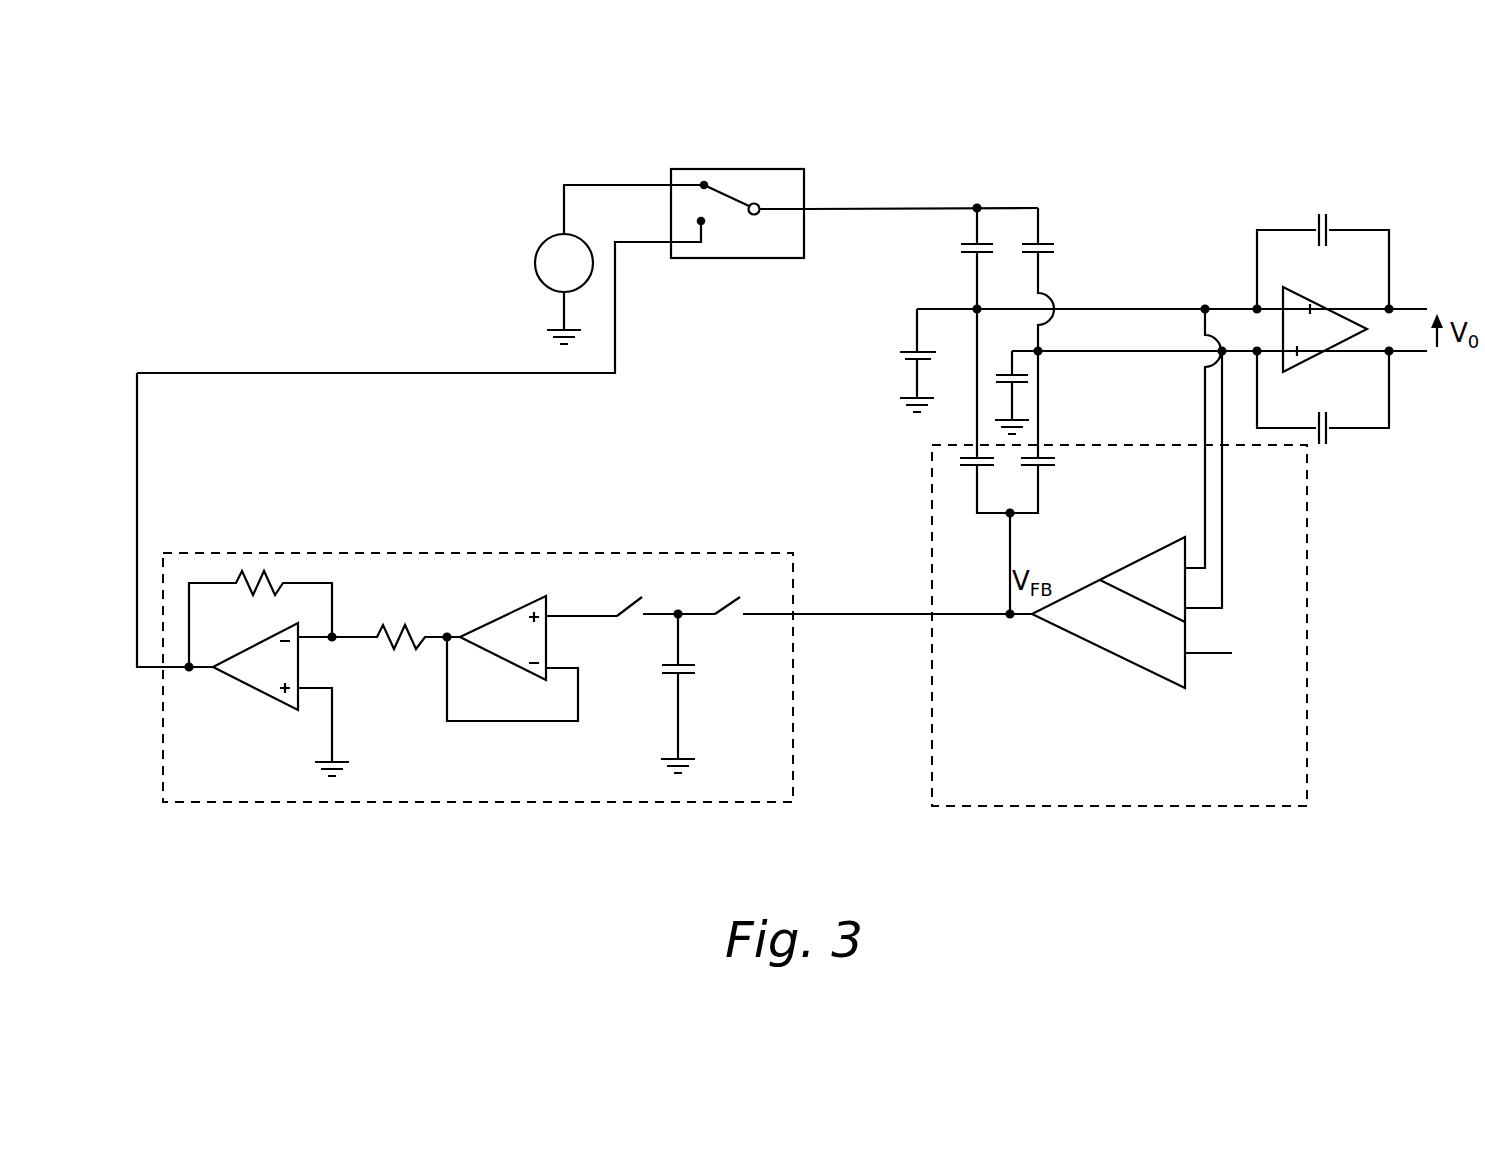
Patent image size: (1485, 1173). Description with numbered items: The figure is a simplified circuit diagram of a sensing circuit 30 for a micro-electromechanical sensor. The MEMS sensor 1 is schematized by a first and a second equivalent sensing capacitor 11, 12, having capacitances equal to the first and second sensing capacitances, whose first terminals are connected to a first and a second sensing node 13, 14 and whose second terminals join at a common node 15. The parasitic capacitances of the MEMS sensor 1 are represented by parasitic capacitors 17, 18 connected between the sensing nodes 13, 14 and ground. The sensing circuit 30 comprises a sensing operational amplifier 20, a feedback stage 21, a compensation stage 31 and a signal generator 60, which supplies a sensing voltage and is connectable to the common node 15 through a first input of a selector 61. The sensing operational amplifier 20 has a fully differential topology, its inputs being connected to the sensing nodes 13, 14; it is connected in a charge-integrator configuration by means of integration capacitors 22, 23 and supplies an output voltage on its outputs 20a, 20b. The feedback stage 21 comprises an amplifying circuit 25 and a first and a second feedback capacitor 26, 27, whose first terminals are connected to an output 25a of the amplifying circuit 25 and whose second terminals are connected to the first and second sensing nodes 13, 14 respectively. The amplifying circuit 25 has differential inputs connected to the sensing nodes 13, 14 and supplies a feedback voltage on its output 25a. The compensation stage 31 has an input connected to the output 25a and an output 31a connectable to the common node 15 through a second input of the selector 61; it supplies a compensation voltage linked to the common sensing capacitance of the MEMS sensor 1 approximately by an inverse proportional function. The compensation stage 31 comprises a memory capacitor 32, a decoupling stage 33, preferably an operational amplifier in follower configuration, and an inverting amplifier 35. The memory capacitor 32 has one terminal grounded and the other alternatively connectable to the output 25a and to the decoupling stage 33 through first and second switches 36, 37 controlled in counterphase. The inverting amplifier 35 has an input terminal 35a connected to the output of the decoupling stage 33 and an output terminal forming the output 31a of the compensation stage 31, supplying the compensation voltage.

The MEMS sensor 1 is at (1140, 289).
The first equivalent sensing capacitor 11 is at (960, 246).
The second equivalent sensing capacitor 12 is at (1055, 250).
The first sensing node 13 is at (977, 308).
The second sensing node 14 is at (1040, 352).
The common node 15 is at (977, 207).
The parasitic capacitor 17 is at (900, 352).
The parasitic capacitor 18 is at (1028, 378).
The sensing operational amplifier 20 is at (1289, 297).
The output of sensing operational amplifier 20a is at (1405, 308).
The output of sensing operational amplifier 20b is at (1405, 353).
The feedback stage 21 is at (945, 765).
The integration capacitor 22 is at (1320, 215).
The integration capacitor 23 is at (1320, 445).
The amplifying circuit 25 is at (1135, 652).
The output of amplifying circuit 25a is at (1025, 618).
The first feedback capacitor 26 is at (960, 460).
The second feedback capacitor 27 is at (1055, 463).
The sensing circuit 30 is at (1085, 557).
The compensation stage 31 is at (474, 628).
The output of compensation stage 31a is at (137, 507).
The memory capacitor 32 is at (665, 667).
The decoupling stage 33 is at (500, 625).
The inverting amplifier 35 is at (378, 571).
The input terminal of inverting amplifier 35a is at (315, 640).
The first switch 36 is at (742, 597).
The second switch 37 is at (645, 597).
The signal generator 60 is at (545, 254).
The selector 61 is at (762, 249).